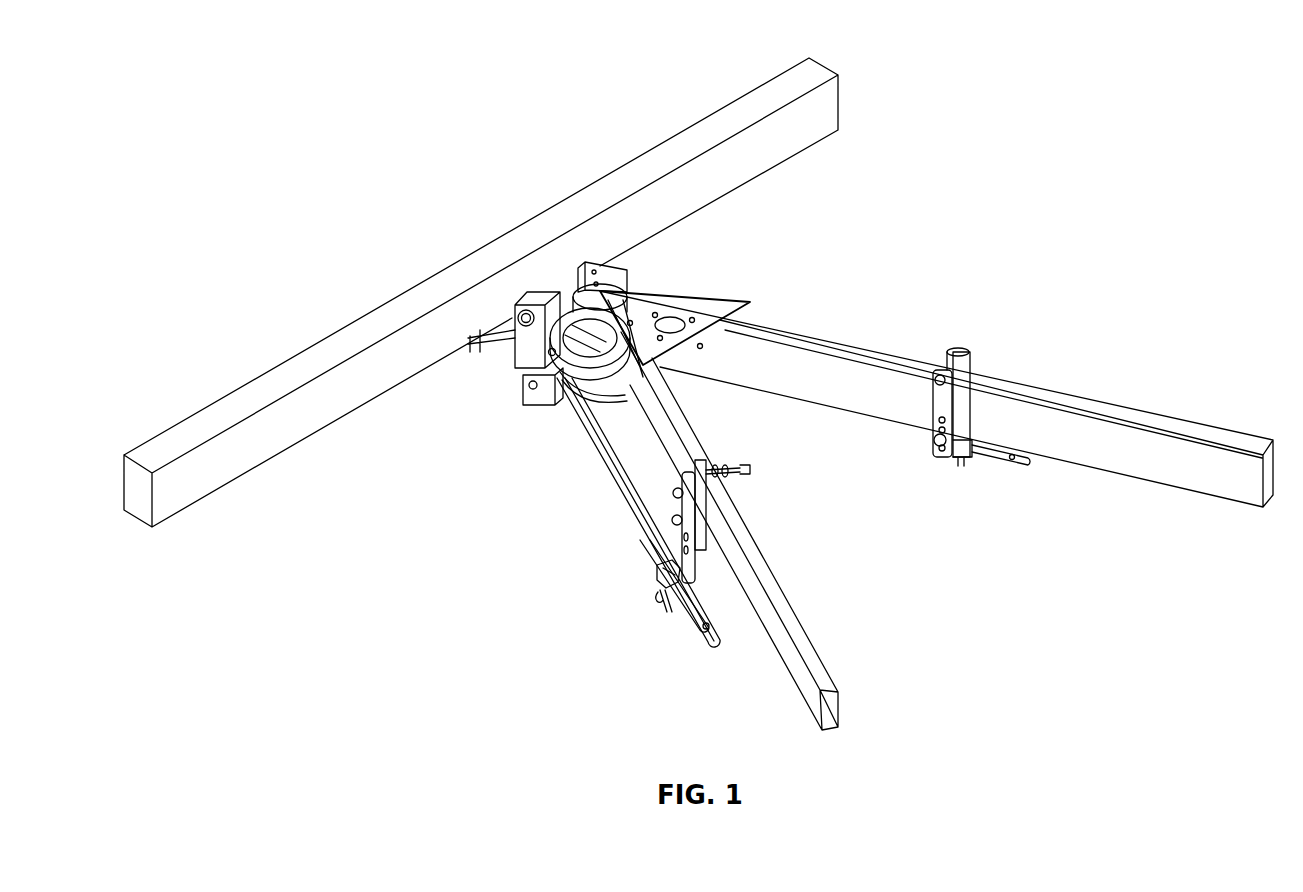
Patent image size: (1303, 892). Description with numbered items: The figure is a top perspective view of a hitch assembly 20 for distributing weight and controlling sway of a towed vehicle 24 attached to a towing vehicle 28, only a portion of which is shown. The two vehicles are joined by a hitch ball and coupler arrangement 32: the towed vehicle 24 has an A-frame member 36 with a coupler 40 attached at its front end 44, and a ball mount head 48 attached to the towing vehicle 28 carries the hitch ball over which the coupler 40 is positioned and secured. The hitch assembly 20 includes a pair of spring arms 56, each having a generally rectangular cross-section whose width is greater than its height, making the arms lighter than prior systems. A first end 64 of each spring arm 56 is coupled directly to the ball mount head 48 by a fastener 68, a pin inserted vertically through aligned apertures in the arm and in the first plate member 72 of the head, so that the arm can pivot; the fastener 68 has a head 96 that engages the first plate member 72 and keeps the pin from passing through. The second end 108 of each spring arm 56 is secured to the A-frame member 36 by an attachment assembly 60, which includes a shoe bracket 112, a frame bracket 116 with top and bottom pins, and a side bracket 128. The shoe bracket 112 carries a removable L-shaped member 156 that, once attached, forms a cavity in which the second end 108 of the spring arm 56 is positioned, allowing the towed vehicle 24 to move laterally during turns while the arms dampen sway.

The hitch assembly 20 is at (910, 259).
The towed vehicle 24 is at (1233, 440).
The towing vehicle 28 is at (829, 120).
The hitch ball and coupler arrangement 32 is at (672, 249).
The A-frame member 36 is at (1148, 470).
The coupler 40 is at (627, 282).
The front end 44 is at (736, 317).
The ball mount head 48 is at (540, 310).
The spring arm 56 is at (1010, 462).
The attachment assembly 60 is at (964, 336).
The first end 64 is at (567, 382).
The fastener 68 is at (530, 357).
The first plate member 72 is at (552, 355).
The head 96 is at (555, 365).
The second end 108 is at (655, 532).
The shoe bracket 112 is at (960, 460).
The frame bracket 116 is at (940, 405).
The side bracket 128 is at (975, 360).
The L-shaped member 156 is at (657, 578).